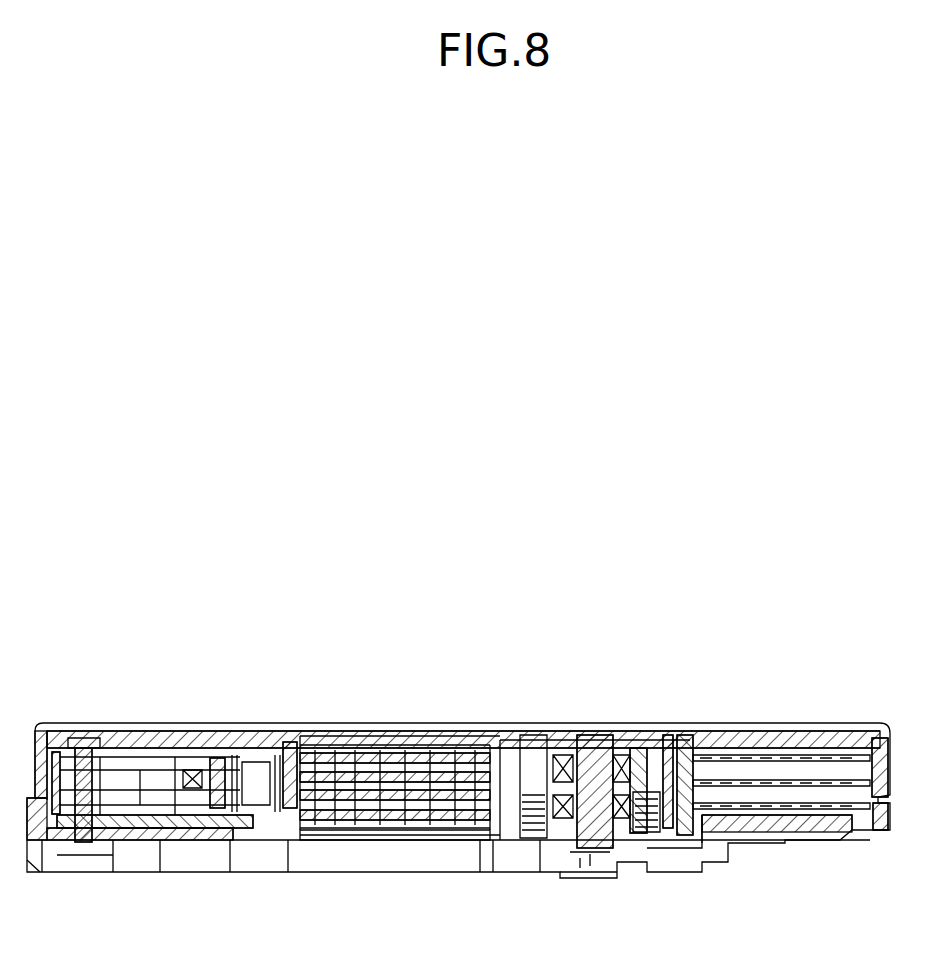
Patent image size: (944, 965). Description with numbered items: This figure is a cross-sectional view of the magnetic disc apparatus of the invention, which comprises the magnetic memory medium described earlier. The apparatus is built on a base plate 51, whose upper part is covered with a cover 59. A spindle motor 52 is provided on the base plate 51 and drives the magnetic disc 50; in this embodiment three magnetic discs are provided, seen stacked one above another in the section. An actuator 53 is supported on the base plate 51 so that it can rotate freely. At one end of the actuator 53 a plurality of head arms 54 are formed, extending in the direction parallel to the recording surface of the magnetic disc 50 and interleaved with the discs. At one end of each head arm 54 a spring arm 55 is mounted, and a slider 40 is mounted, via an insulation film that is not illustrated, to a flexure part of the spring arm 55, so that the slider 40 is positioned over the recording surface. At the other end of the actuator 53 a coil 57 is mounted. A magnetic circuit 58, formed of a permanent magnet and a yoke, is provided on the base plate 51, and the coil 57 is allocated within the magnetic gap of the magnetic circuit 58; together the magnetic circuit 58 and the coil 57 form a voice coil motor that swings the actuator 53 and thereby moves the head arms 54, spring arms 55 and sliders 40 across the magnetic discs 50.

The slider 40 is at (482, 723).
The magnetic disc 50 is at (822, 740).
The base plate 51 is at (380, 835).
The spindle motor 52 is at (712, 723).
The actuator 53 is at (330, 842).
The head arm 54 is at (363, 723).
The spring arm 55 is at (440, 723).
The coil 57 is at (140, 723).
The magnetic circuit 58 is at (113, 710).
The cover 59 is at (282, 723).